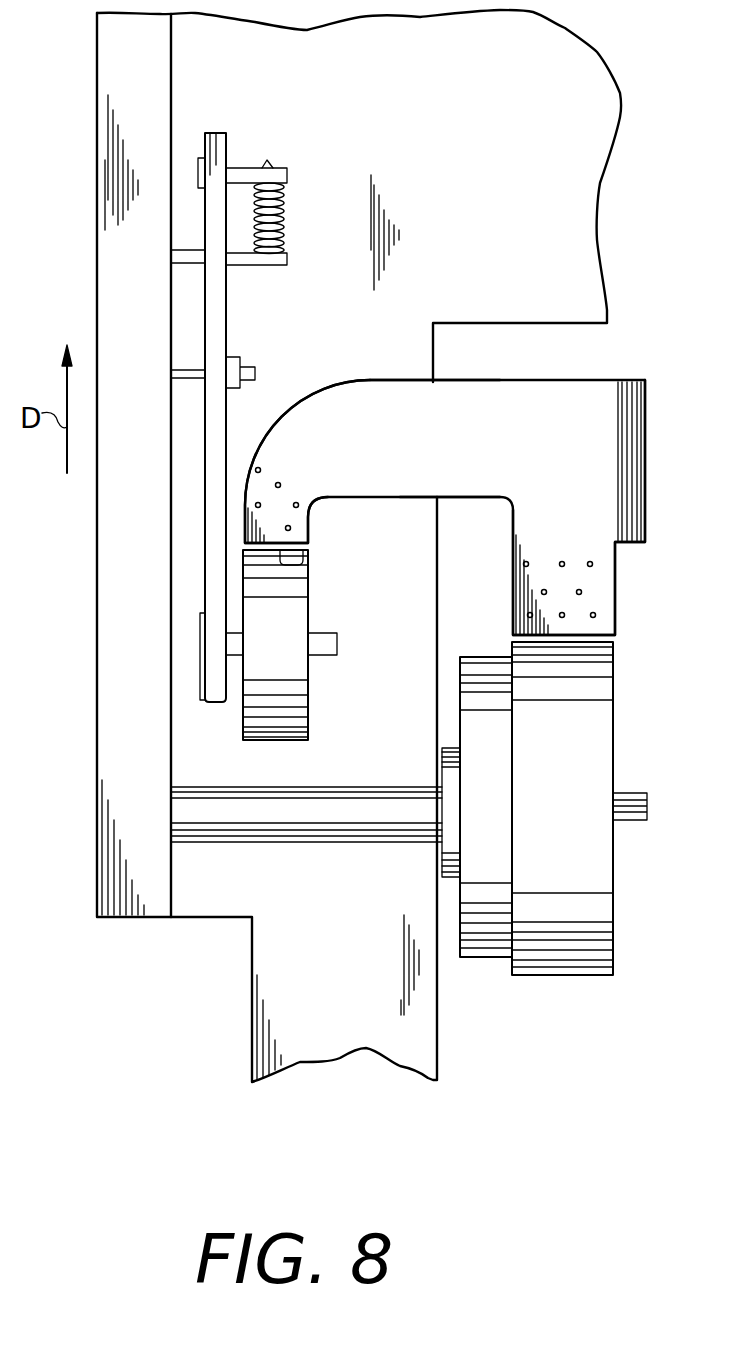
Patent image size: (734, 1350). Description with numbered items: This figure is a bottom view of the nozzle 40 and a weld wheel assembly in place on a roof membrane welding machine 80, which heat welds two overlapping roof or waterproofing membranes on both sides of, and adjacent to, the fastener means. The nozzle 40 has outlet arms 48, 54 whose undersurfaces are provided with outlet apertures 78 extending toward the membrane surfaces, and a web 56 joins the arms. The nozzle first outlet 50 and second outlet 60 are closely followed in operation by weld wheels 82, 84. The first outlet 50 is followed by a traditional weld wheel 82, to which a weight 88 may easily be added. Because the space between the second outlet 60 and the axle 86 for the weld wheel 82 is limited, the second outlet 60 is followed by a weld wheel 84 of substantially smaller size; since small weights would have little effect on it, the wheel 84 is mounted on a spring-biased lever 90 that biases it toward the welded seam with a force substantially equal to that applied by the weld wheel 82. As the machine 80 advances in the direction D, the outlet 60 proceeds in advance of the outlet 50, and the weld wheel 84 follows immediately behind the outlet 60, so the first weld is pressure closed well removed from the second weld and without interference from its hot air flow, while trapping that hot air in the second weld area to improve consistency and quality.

The nozzle 40 is at (453, 459).
The outlet arm 48 is at (616, 597).
The first outlet 50 is at (572, 640).
The outlet arm 54 is at (253, 453).
The web of bracket 56 is at (450, 500).
The second outlet 60 is at (303, 560).
The outlet apertures 78 is at (261, 505).
The machine 80 is at (577, 85).
The weld wheel 82 is at (598, 760).
The weld wheel 84 is at (287, 690).
The axle 86 is at (302, 822).
The weight 88 is at (487, 943).
The spring-biased lever 90 is at (205, 472).